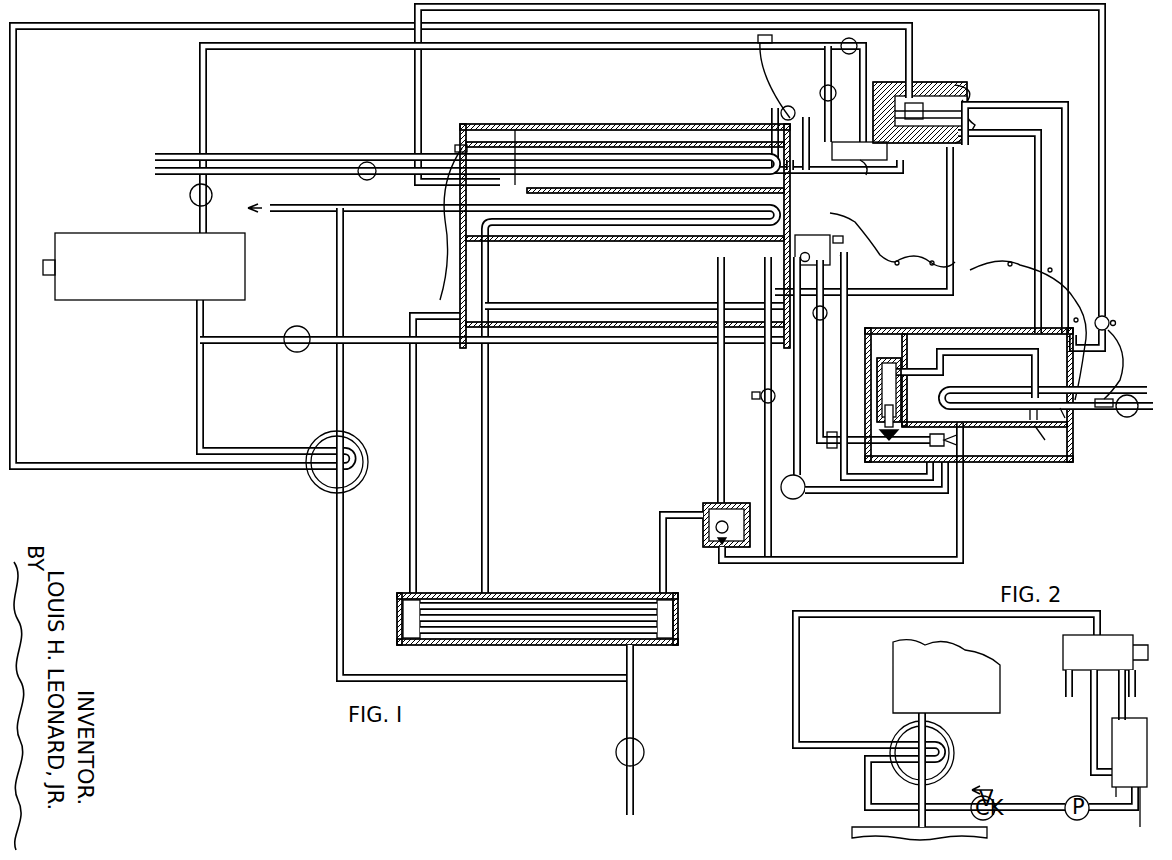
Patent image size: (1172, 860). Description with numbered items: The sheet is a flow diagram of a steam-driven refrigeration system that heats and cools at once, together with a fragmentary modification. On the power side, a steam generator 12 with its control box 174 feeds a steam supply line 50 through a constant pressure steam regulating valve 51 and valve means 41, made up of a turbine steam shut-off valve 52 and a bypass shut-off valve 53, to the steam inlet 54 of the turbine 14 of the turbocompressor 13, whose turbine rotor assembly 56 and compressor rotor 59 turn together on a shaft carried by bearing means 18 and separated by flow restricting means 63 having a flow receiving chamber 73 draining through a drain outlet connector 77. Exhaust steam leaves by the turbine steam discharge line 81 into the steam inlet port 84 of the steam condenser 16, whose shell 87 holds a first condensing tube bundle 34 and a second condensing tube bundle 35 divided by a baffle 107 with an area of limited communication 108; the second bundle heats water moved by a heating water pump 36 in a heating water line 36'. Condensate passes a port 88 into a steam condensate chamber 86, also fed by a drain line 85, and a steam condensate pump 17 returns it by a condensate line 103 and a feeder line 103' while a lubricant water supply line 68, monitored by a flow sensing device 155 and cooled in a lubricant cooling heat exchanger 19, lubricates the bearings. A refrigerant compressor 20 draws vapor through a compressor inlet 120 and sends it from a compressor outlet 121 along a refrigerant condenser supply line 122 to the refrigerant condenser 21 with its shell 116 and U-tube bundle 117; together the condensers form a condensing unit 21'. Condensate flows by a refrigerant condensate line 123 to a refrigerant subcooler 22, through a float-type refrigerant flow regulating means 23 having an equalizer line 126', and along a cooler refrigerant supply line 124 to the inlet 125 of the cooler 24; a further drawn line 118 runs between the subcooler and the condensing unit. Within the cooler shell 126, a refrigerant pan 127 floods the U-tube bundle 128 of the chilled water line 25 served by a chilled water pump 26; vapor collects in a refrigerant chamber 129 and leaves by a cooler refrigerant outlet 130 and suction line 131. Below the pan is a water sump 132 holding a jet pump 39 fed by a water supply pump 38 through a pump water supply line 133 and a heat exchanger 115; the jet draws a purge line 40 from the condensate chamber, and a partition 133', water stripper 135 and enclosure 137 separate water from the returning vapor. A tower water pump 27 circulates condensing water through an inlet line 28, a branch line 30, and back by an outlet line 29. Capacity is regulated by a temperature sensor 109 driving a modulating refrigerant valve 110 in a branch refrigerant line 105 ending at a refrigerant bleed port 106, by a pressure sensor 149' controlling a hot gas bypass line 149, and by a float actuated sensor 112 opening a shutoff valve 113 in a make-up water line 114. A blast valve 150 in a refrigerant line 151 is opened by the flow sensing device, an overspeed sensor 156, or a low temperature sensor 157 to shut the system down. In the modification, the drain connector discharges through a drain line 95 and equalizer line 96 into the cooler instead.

In FIG. 1, the steam generator 12 is at (172, 278).
In FIG. 1, the turbocompressor 13 is at (928, 78).
In FIG. 2, the turbocompressor 13 is at (1108, 664).
In FIG. 1, the turbine 14 is at (893, 82).
In FIG. 1, the steam condenser 16 is at (575, 150).
In FIG. 1, the steam condensate pump 17 is at (297, 326).
In FIG. 1, the bearing means 18 is at (925, 148).
In FIG. 1, the lubricant cooling heat exchanger 19 is at (312, 489).
In FIG. 2, the lubricant cooling heat exchanger 19 is at (950, 748).
In FIG. 1, the refrigerant compressor 20 is at (968, 88).
In FIG. 1, the refrigerant condenser 21 is at (634, 232).
In FIG. 1, the condensing unit 21' is at (475, 103).
In FIG. 2, the condensing unit 21' is at (946, 676).
In FIG. 1, the refrigerant subcooler 22 is at (528, 594).
In FIG. 2, the refrigerant subcooler 22 is at (862, 826).
In FIG. 1, the refrigerant flow regulating means 23 is at (702, 504).
In FIG. 1, the cooler 24 is at (1060, 470).
In FIG. 2, the cooler 24 is at (1140, 762).
In FIG. 1, the chilled water line 25 is at (1116, 414).
In FIG. 1, the chilled water pump 26 is at (1136, 419).
In FIG. 1, the tower water pump 27 is at (647, 754).
In FIG. 1, the inlet line 28 is at (636, 724).
In FIG. 1, the outlet line 29 is at (308, 208).
In FIG. 1, the branch line 30 is at (505, 678).
In FIG. 1, the first condensing tube bundle 34 is at (704, 212).
In FIG. 1, the second condensing tube bundle 35 is at (603, 186).
In FIG. 1, the heating water pump 36 is at (378, 180).
In FIG. 1, the heating water line 36' is at (466, 151).
In FIG. 1, the water supply pump 38 is at (800, 498).
In FIG. 1, the jet pump 39 is at (961, 441).
In FIG. 1, the purge line 40 is at (847, 265).
In FIG. 1, the valve means 41 is at (830, 72).
In FIG. 1, the steam supply line 50 is at (376, 50).
In FIG. 1, the constant pressure steam regulating valve 51 is at (190, 190).
In FIG. 1, the turbine steam shut-off valve 52 is at (848, 38).
In FIG. 1, the bypass shut-off valve 53 is at (828, 93).
In FIG. 1, the steam inlet 54 is at (842, 81).
In FIG. 1, the turbine rotor assembly 56 is at (886, 82).
In FIG. 1, the compressor rotor 59 is at (970, 110).
In FIG. 1, the flow restricting means 63 is at (874, 168).
In FIG. 1, the lubricant water supply line 68 is at (100, 22).
In FIG. 1, the flow receiving chamber 73 is at (940, 98).
In FIG. 2, the drain outlet connector 77 is at (1092, 688).
In FIG. 1, the turbine steam discharge line 81 is at (842, 184).
In FIG. 1, the steam inlet port 84 is at (807, 182).
In FIG. 1, the drain line 85 is at (925, 250).
In FIG. 1, the steam condensate chamber 86 is at (862, 229).
In FIG. 1, the steam condenser shell 87 is at (655, 142).
In FIG. 1, the port 88 is at (812, 246).
In FIG. 2, the drain line 95 is at (1092, 736).
In FIG. 2, the equalizer line 96 is at (1126, 710).
In FIG. 1, the condensate line 103 is at (750, 408).
In FIG. 1, the feeder line 103' is at (235, 319).
In FIG. 1, the branch refrigerant line 105 is at (420, 80).
In FIG. 1, the refrigerant bleed port 106 is at (495, 190).
In FIG. 1, the baffle 107 is at (660, 190).
In FIG. 1, the area of limited communication 108 is at (516, 128).
In FIG. 1, the temperature sensor 109 is at (1102, 396).
In FIG. 1, the modulating refrigerant valve 110 is at (1119, 308).
In FIG. 1, the float actuated sensor 112 is at (843, 240).
In FIG. 1, the shutoff valve 113 is at (812, 350).
In FIG. 1, the make-up water line 114 is at (818, 404).
In FIG. 1, the heat exchanger 115 is at (832, 450).
In FIG. 1, the refrigerant condenser shell 116 is at (600, 335).
In FIG. 1, the refrigerant condensing U-tube bundle 117 is at (683, 296).
In FIG. 1, the pipe 118 is at (485, 446).
In FIG. 1, the compressor inlet 120 is at (985, 115).
In FIG. 1, the compressor outlet 121 is at (954, 160).
In FIG. 1, the refrigerant condenser supply line 122 is at (958, 262).
In FIG. 1, the refrigerant condensate line 123 is at (414, 450).
In FIG. 1, the cooler refrigerant supply line 124 is at (962, 542).
In FIG. 1, the inlet 125 is at (972, 466).
In FIG. 1, the shell 126 is at (969, 395).
In FIG. 1, the equalizer line 126' is at (701, 380).
In FIG. 1, the refrigerant pan 127 is at (1000, 410).
In FIG. 1, the U-tube bundle 128 is at (1032, 418).
In FIG. 1, the refrigerant chamber 129 is at (984, 379).
In FIG. 1, the cooler refrigerant outlet 130 is at (1045, 312).
In FIG. 1, the suction line 131 is at (1040, 176).
In FIG. 1, the water sump 132 is at (1038, 470).
In FIG. 1, the pump water supply line 133 is at (875, 490).
In FIG. 1, the partition 133' is at (895, 364).
In FIG. 1, the water stripper 135 is at (930, 357).
In FIG. 1, the enclosure 137 is at (884, 356).
In FIG. 1, the hot gas bypass line 149 is at (750, 471).
In FIG. 1, the pressure sensor 149' is at (445, 207).
In FIG. 1, the blast valve 150 is at (784, 108).
In FIG. 1, the refrigerant line 151 is at (772, 114).
In FIG. 1, the flow sensing device 155 is at (764, 36).
In FIG. 1, the overspeed sensor 156 is at (859, 150).
In FIG. 1, the sensor 157 is at (1072, 433).
In FIG. 1, the control box 174 is at (46, 272).